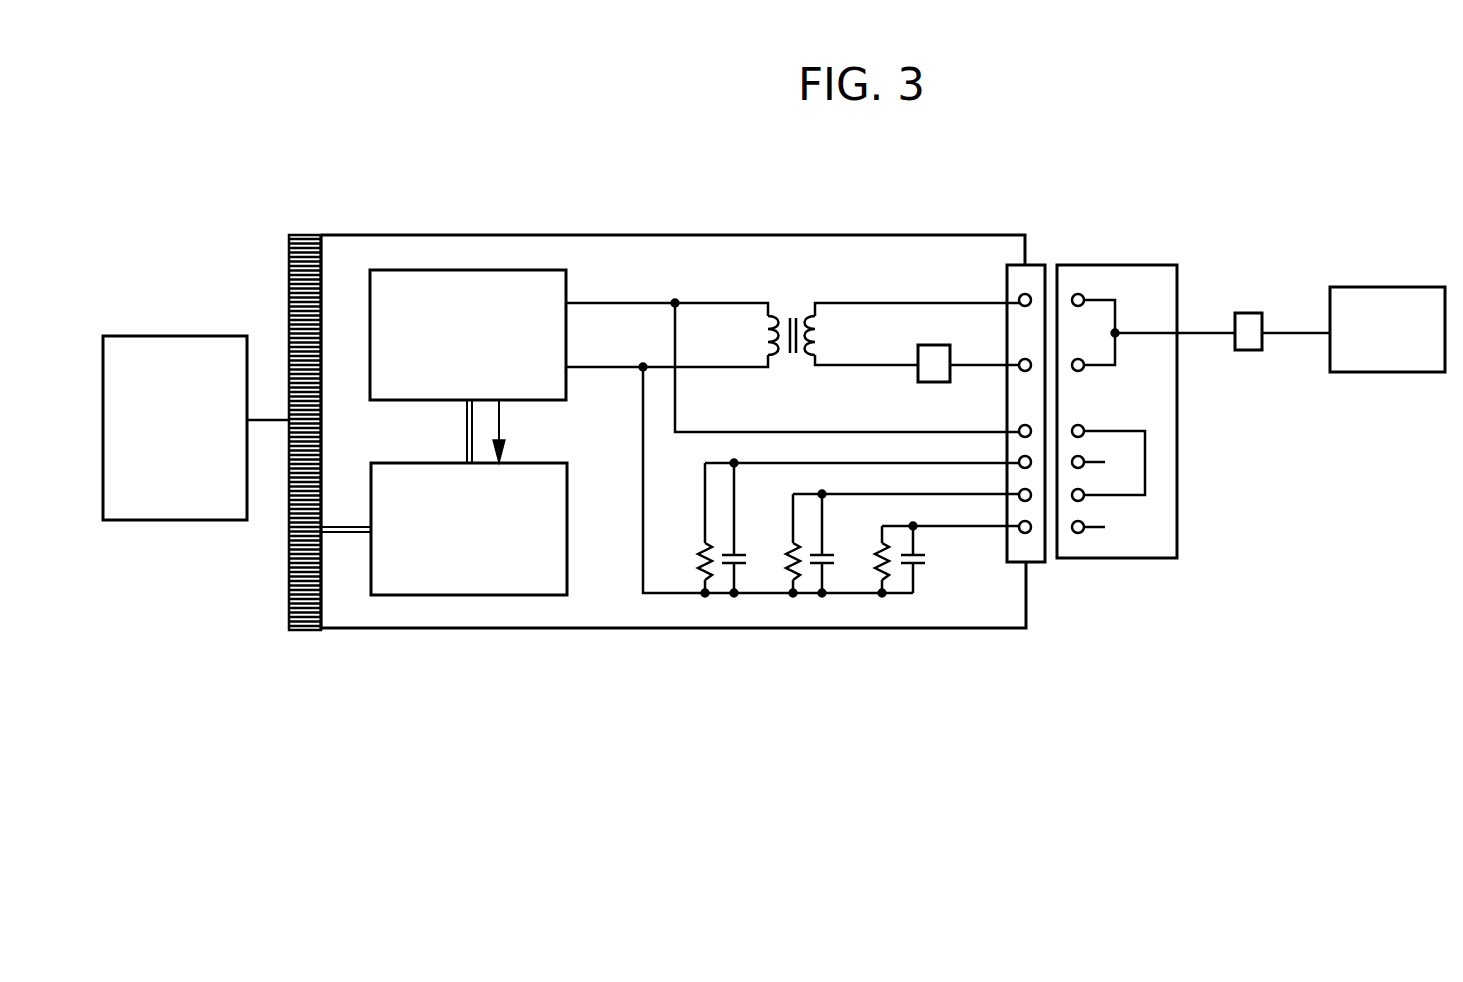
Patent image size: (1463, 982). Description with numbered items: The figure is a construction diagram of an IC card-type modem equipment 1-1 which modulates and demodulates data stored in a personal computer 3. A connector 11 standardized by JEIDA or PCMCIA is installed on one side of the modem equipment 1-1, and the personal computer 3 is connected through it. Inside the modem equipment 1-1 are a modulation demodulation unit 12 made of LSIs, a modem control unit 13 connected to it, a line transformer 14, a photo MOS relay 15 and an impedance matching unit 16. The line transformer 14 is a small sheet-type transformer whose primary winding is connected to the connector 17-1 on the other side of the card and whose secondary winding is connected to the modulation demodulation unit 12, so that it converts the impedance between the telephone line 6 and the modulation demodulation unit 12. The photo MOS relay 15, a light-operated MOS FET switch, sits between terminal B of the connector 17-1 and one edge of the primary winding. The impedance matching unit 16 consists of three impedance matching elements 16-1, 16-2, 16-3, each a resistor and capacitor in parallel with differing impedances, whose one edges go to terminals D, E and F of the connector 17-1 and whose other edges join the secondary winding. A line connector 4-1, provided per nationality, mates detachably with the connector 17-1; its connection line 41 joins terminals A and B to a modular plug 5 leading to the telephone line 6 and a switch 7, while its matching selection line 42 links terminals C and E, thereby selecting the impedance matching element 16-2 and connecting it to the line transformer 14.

The IC card-type modem equipment 1-1 is at (468, 235).
The personal computer 3 is at (160, 336).
The line connector 4-1 is at (1087, 265).
The modular plug 5 is at (1245, 313).
The telephone line 6 is at (1295, 333).
The switch 7 is at (1378, 287).
The connector 11 is at (289, 270).
The modulation demodulation unit 12 is at (370, 338).
The modem control unit 13 is at (371, 478).
The line transformer 14 is at (792, 316).
The photo MOS relay 15 is at (920, 380).
The impedance matching unit 16 is at (821, 683).
The impedance matching element 16-1 is at (723, 583).
The impedance matching element 16-2 is at (810, 583).
The impedance matching element 16-3 is at (897, 583).
The connector 17-1 is at (1035, 265).
The connection line 41 is at (1117, 330).
The matching selection line 42 is at (1145, 457).